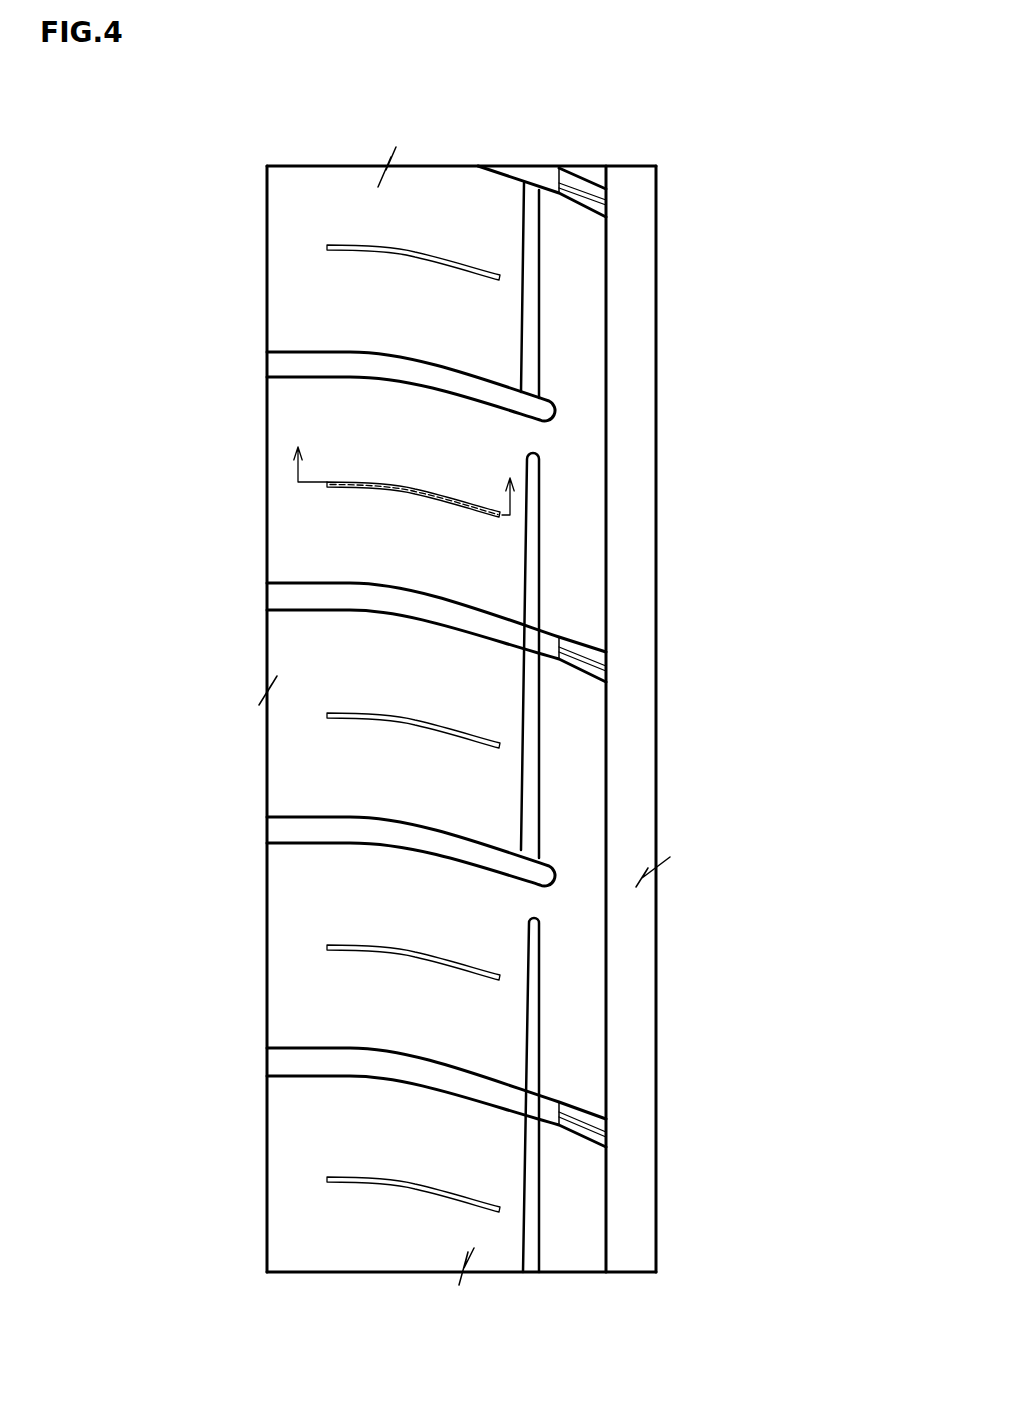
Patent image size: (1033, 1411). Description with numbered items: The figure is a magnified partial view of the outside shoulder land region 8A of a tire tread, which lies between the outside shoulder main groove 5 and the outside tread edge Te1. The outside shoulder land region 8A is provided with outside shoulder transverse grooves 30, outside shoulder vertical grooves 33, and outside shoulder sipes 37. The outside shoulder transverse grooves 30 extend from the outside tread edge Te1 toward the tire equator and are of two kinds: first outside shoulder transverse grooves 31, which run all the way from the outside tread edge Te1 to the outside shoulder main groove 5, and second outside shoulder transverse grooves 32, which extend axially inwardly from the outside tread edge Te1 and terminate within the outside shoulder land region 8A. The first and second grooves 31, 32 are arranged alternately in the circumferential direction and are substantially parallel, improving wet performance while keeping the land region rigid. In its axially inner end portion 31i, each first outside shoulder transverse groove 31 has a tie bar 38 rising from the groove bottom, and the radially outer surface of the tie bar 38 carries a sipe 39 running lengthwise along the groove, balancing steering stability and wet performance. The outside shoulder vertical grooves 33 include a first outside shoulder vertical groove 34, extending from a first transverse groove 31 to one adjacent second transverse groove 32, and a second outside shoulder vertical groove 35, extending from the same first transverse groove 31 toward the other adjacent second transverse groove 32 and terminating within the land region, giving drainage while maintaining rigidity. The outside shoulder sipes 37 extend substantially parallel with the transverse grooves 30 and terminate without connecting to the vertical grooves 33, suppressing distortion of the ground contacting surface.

The outside tread edge Te1 is at (267, 228).
The outside shoulder land region 8A is at (439, 204).
The outside shoulder main groove 5 is at (634, 202).
The outside shoulder transverse grooves 30 is at (770, 315).
The first outside shoulder transverse groove 31 is at (500, 615).
The axially inner end portion 31i is at (592, 634).
The second outside shoulder transverse groove 32 is at (484, 382).
The outside shoulder vertical grooves 33 is at (544, 301).
The first outside shoulder vertical groove 34 is at (542, 766).
The second outside shoulder vertical groove 35 is at (542, 992).
The outside shoulder sipe 37 is at (415, 257).
The tie bar 38 is at (592, 657).
The sipe 39 is at (595, 670).